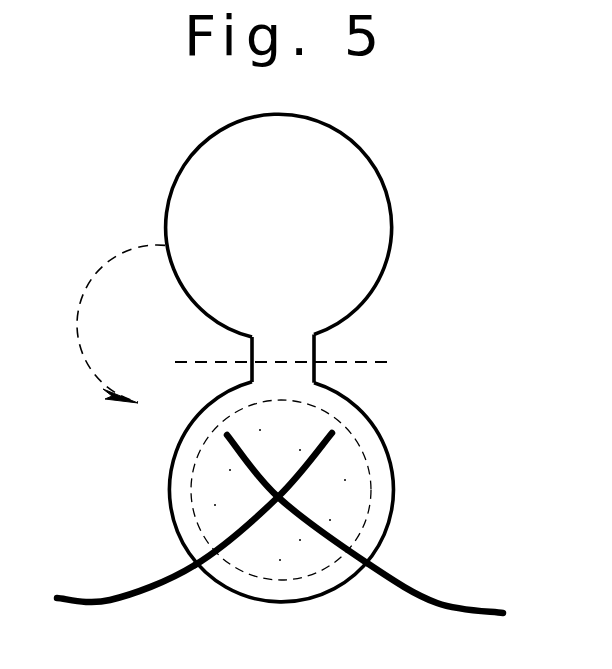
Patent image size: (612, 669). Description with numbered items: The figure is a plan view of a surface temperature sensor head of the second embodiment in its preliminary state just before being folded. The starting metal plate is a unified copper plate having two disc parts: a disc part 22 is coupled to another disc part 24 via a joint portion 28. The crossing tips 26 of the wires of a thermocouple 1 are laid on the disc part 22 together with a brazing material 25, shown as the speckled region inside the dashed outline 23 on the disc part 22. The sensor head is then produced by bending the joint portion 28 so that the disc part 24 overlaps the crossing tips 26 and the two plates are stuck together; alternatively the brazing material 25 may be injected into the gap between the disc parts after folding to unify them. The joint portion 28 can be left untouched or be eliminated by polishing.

The thermocouple 1 is at (91, 603).
The disc part 22 is at (380, 510).
The filled region 23 is at (317, 491).
The disc part 24 is at (368, 249).
The brazing material 25 is at (200, 494).
The crossing tips 26 is at (278, 497).
The joint portion 28 is at (282, 349).